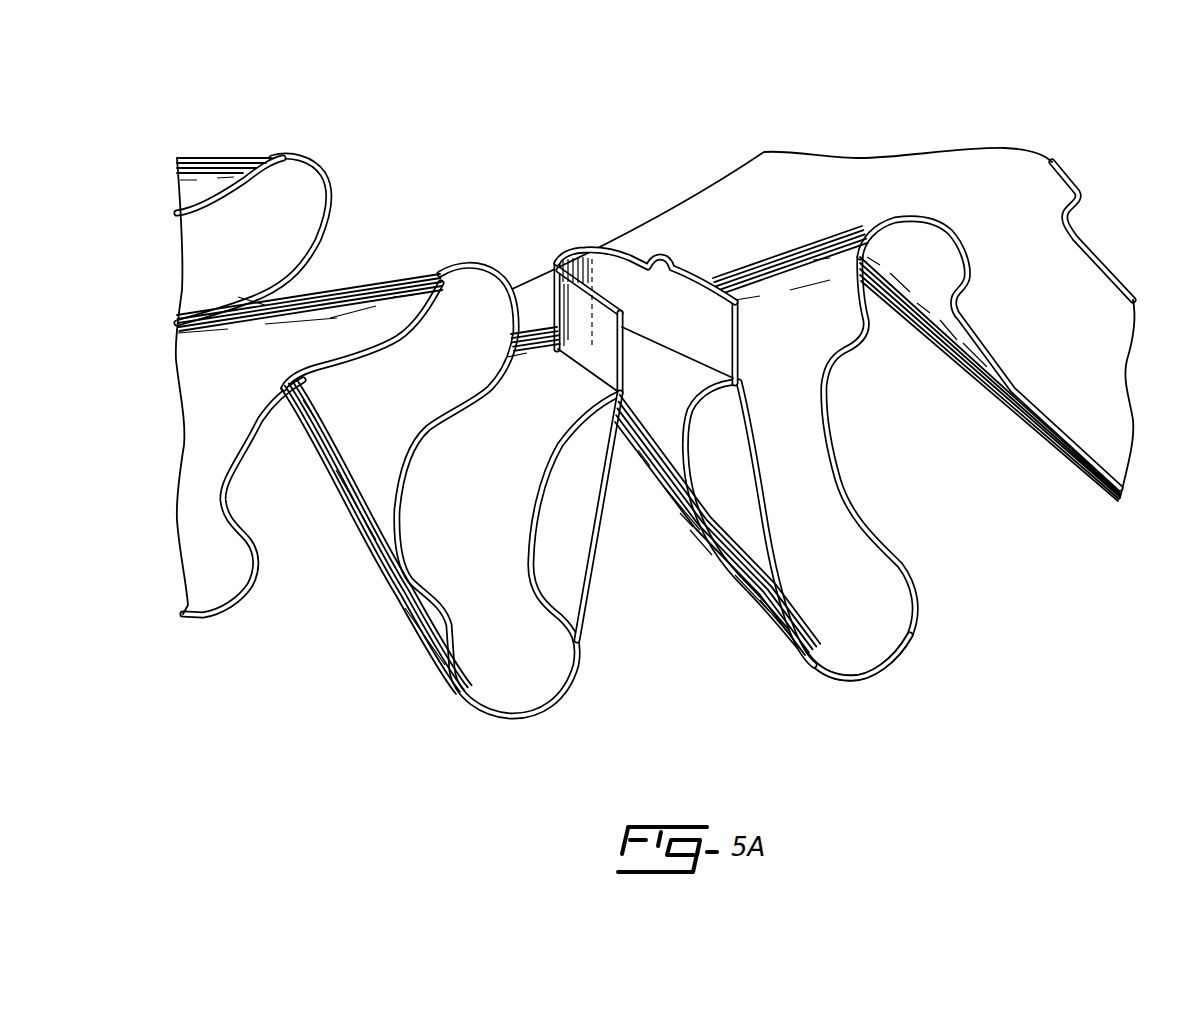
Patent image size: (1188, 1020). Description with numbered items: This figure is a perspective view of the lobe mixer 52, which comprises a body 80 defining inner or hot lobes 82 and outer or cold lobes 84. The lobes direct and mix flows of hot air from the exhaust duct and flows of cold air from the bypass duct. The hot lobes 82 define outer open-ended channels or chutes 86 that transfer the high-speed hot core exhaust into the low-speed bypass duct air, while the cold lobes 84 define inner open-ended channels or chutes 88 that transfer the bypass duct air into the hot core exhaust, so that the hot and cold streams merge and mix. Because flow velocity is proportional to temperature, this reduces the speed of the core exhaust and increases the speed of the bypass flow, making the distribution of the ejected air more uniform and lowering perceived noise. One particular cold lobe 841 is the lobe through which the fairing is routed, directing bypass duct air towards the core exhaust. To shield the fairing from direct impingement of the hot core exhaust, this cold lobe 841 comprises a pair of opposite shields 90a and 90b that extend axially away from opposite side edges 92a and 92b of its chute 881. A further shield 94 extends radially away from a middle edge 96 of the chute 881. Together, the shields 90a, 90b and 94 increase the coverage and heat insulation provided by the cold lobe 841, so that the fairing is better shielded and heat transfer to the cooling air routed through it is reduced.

The lobe mixer 52 is at (1058, 100).
The body 80 is at (857, 177).
The inner or hot lobes 82 is at (753, 622).
The outer or cold lobes 84 is at (777, 282).
The cold lobe 841 is at (542, 357).
The outer open-ended channels or chutes 86 is at (853, 628).
The inner open-ended channels or chutes 88 is at (878, 300).
The chute 881 is at (650, 437).
The shield 90a is at (572, 483).
The shield 90b is at (733, 462).
The side edge 92a is at (525, 557).
The side edge 92b is at (713, 527).
The shield 94 is at (620, 287).
The middle edge 96 is at (690, 347).